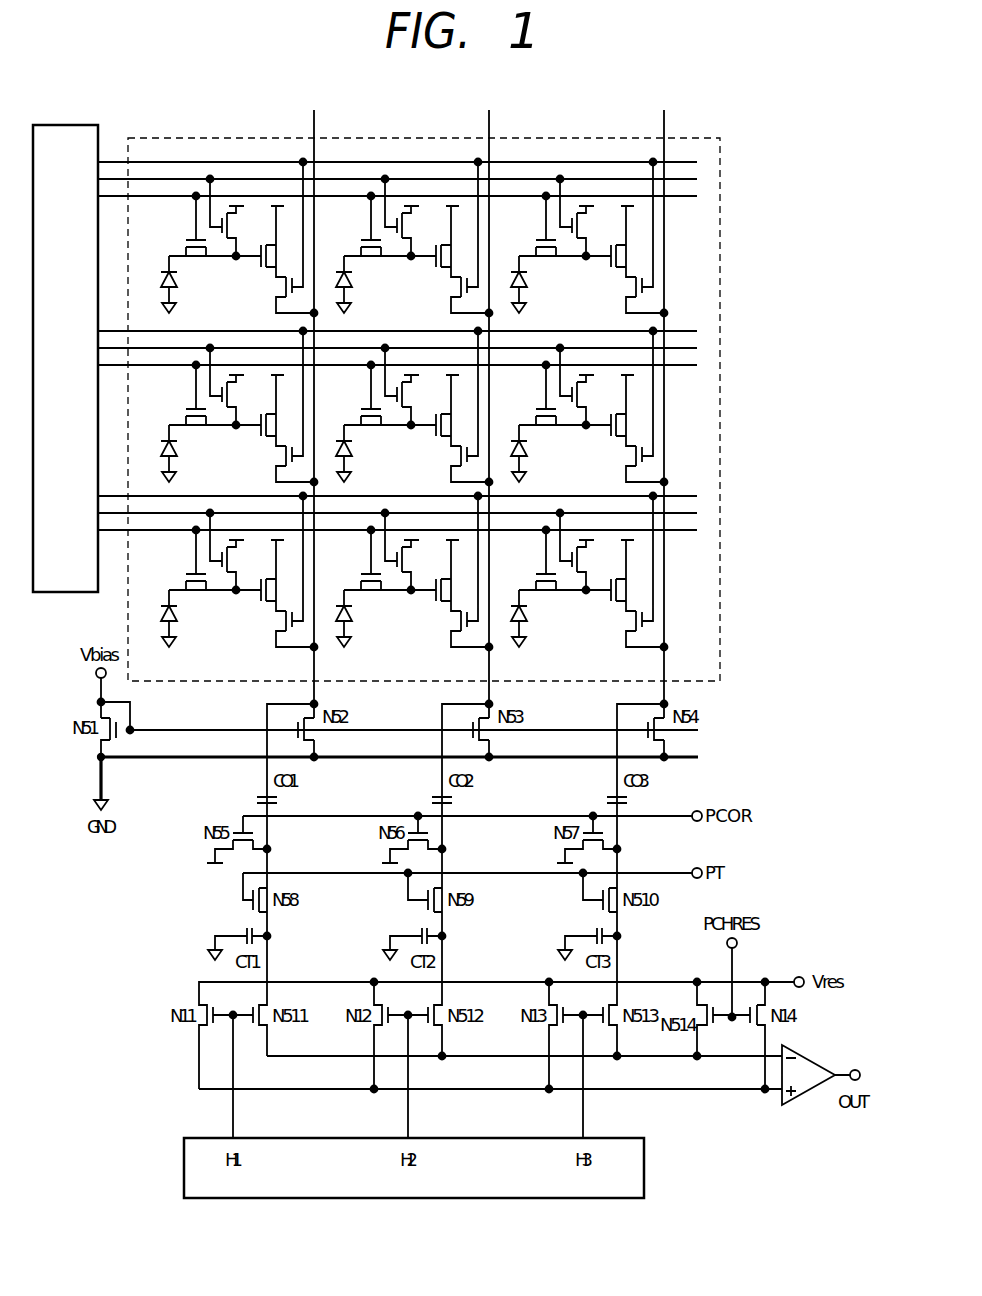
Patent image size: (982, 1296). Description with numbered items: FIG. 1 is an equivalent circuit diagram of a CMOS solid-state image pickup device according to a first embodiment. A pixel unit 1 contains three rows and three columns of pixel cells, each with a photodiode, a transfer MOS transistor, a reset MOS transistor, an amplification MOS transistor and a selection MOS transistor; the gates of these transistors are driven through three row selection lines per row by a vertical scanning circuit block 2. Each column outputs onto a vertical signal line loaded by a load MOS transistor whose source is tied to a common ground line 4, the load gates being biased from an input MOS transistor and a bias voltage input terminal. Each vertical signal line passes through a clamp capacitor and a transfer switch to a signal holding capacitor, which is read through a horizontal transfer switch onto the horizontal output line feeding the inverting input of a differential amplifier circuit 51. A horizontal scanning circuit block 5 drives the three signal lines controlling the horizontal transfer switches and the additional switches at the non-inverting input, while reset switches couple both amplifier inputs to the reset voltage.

The pixel unit 1 is at (720, 140).
The vertical scanning circuit block 2 is at (96, 127).
The common GND line 4 is at (100, 775).
The horizontal scanning circuit block 5 is at (645, 1160).
The differential amplifier circuit 51 is at (808, 1098).